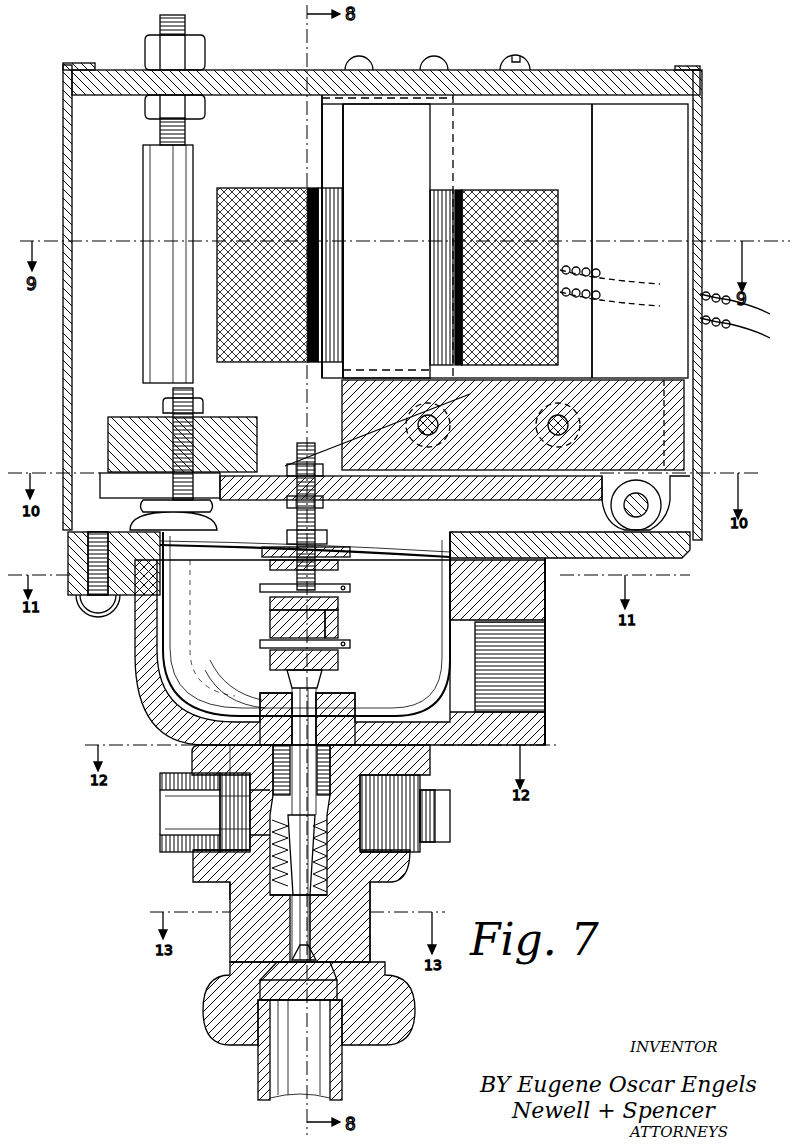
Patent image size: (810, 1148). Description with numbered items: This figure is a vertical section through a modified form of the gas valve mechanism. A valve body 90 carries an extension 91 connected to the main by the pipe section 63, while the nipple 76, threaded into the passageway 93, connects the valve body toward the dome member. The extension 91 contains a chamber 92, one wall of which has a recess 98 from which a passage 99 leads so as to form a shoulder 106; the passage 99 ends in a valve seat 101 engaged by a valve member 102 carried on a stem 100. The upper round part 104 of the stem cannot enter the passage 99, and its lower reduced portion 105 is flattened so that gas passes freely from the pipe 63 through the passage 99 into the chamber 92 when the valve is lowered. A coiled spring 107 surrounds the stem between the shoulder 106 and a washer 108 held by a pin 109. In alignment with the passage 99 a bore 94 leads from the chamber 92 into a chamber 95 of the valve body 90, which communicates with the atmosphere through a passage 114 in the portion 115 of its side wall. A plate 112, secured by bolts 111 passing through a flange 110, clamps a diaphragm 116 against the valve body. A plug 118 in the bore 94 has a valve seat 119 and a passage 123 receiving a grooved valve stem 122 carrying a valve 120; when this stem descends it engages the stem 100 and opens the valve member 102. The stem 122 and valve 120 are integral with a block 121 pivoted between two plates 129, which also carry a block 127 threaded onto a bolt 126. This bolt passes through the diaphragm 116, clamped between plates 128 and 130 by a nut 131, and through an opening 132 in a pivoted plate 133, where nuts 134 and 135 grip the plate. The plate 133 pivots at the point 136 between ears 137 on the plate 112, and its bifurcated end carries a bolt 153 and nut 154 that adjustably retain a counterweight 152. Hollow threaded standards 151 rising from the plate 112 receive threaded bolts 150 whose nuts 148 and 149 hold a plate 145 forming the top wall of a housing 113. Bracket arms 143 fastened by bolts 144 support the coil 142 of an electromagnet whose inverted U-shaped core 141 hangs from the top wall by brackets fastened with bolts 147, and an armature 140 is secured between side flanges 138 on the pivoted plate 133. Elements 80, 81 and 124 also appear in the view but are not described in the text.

The pipe section 63 is at (258, 1066).
The nipple 76 is at (165, 845).
The lead wire 80 is at (670, 295).
The lead wire 81 is at (670, 318).
The valve body 90 is at (322, 652).
The extension 91 is at (385, 995).
The chamber 92 is at (322, 808).
The passageway 93 is at (245, 803).
The bore 94 is at (395, 770).
The chamber 95 is at (405, 648).
The recess 98 is at (408, 866).
The passage 99 is at (292, 930).
The stem 100 is at (435, 795).
The valve seat 101 is at (330, 975).
The valve member 102 is at (280, 975).
The upper round part of stem 104 is at (230, 870).
The lower portion of stem 105 is at (310, 920).
The shoulder 106 is at (262, 912).
The coiled spring 107 is at (235, 886).
The washer 108 is at (240, 818).
The pin 109 is at (220, 790).
The flange 110 is at (76, 598).
The bolts 111 is at (98, 606).
The plate 112 is at (68, 540).
The housing 113 is at (63, 160).
The passage 114 is at (545, 665).
The side wall portion 115 is at (548, 600).
The diaphragm 116 is at (235, 562).
The plug 118 is at (345, 700).
The valve seat 119 is at (318, 688).
The valve 120 is at (338, 660).
The block 121 is at (338, 625).
The valve stem 122 is at (285, 670).
The passage 123 is at (285, 692).
The passage 124 is at (230, 748).
The threaded bolt 126 is at (305, 443).
The block 127 is at (338, 604).
The plate 128 is at (338, 566).
The plates 129 is at (275, 610).
The plate 130 is at (350, 552).
The nut 131 is at (327, 535).
The opening 132 is at (323, 500).
The pivoted plate 133 is at (440, 502).
The nut 134 is at (297, 470).
The nut 135 is at (295, 522).
The pivotal point 136 is at (648, 505).
The ears or lugs 137 is at (664, 520).
The side flanges 138 is at (688, 400).
The armature 140 is at (688, 438).
The core 141 is at (688, 124).
The coil 142 is at (290, 188).
The bracket arms 143 is at (332, 112).
The bolts 144 is at (420, 66).
The plate 145 is at (268, 70).
The bolts 147 is at (520, 62).
The nut 148 is at (200, 50).
The nut 149 is at (145, 107).
The threaded bolt 150 is at (160, 25).
The standards 151 is at (143, 168).
The counterweight 152 is at (108, 440).
The bolt 153 is at (193, 393).
The nut 154 is at (203, 406).